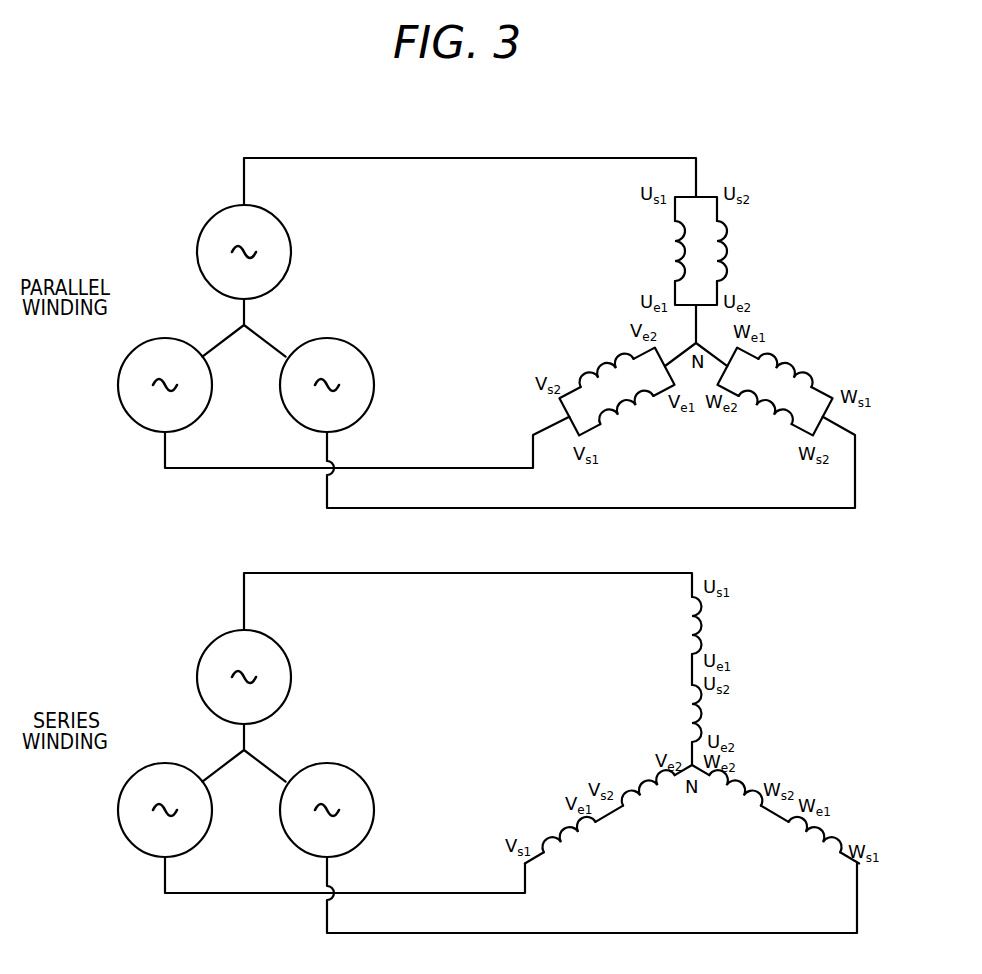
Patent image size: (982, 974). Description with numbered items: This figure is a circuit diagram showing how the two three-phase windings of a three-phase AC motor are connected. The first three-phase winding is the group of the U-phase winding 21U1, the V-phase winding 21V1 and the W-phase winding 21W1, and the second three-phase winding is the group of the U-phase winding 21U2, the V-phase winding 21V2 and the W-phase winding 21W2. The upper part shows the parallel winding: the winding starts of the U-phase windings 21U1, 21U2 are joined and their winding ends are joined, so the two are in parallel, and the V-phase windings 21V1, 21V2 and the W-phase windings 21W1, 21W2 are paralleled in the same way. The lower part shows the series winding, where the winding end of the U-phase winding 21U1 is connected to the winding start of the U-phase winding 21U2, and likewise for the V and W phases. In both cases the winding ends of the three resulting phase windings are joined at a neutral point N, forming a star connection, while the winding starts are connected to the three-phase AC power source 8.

The three-phase AC power source 8 is at (210, 218).
The U-phase winding 21U1 is at (670, 253).
The U-phase winding 21U2 is at (730, 257).
The V-phase winding 21V1 is at (625, 415).
The V-phase winding 21V2 is at (600, 361).
The W-phase winding 21W1 is at (797, 361).
The W-phase winding 21W2 is at (768, 415).